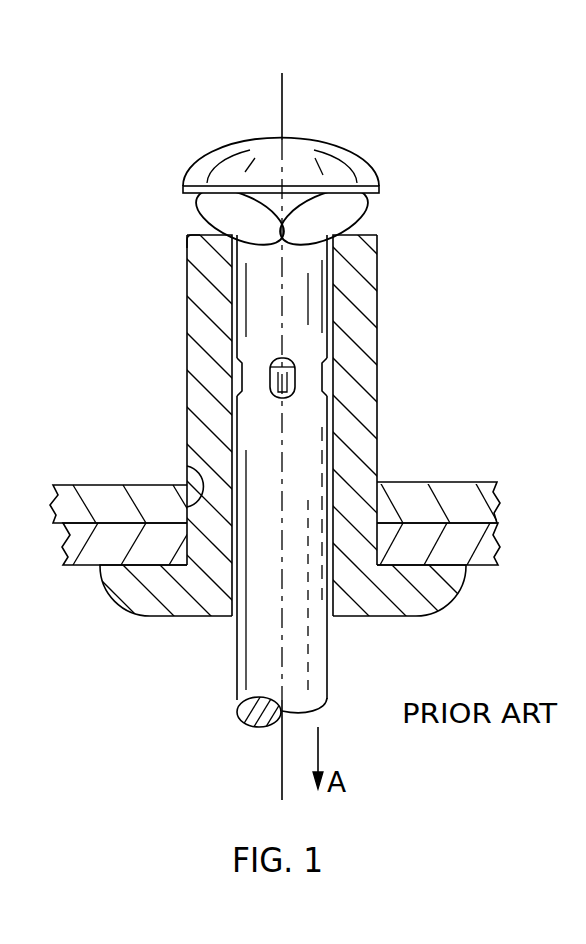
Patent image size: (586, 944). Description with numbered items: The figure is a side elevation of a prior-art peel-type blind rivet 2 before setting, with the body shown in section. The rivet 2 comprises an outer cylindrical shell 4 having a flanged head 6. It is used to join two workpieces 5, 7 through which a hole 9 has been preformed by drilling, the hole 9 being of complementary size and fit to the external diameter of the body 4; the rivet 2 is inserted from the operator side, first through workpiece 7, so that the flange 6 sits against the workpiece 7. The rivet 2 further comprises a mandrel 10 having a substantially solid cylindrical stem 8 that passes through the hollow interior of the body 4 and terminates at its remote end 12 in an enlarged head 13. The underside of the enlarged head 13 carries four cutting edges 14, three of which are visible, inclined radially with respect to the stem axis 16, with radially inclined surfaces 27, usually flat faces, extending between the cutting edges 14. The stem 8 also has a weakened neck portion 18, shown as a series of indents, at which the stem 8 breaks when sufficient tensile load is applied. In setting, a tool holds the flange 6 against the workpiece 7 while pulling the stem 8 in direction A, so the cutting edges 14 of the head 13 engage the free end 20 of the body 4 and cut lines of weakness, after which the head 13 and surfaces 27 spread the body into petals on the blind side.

The peel-type blind rivet 2 is at (440, 262).
The outer cylindrical shell 4 is at (376, 346).
The workpiece 5 is at (95, 488).
The flanged head 6 is at (437, 590).
The workpiece 7 is at (97, 548).
The stem 8 is at (305, 467).
The hole 9 is at (187, 477).
The mandrel 10 is at (223, 650).
The remote end 12 is at (183, 215).
The enlarged head 13 is at (346, 145).
The cutting edges 14 is at (197, 196).
The stem axis 16 is at (286, 84).
The weakened neck portion 18 is at (328, 383).
The free end 20 is at (206, 233).
The radially inclined surfaces 27 is at (231, 205).